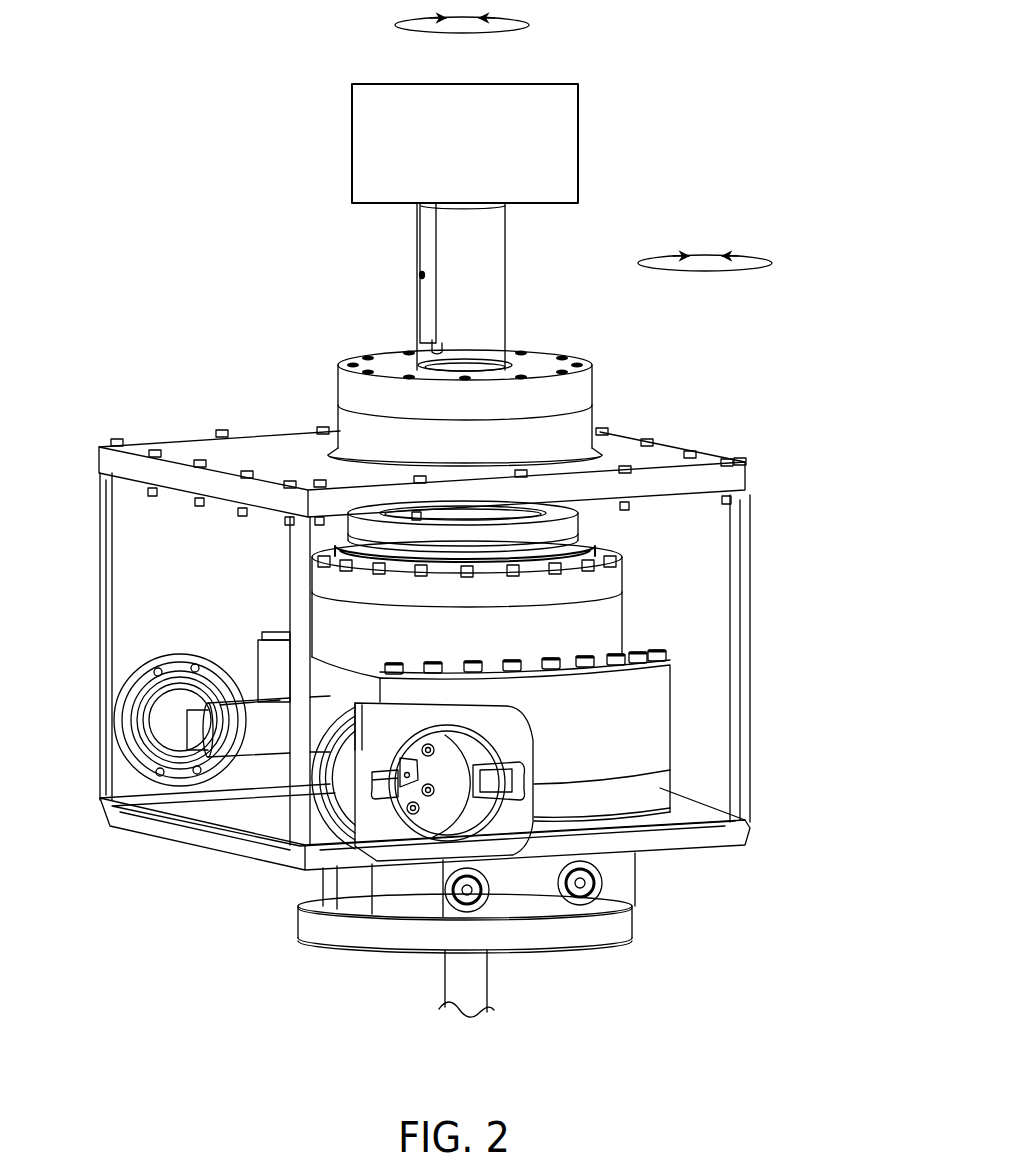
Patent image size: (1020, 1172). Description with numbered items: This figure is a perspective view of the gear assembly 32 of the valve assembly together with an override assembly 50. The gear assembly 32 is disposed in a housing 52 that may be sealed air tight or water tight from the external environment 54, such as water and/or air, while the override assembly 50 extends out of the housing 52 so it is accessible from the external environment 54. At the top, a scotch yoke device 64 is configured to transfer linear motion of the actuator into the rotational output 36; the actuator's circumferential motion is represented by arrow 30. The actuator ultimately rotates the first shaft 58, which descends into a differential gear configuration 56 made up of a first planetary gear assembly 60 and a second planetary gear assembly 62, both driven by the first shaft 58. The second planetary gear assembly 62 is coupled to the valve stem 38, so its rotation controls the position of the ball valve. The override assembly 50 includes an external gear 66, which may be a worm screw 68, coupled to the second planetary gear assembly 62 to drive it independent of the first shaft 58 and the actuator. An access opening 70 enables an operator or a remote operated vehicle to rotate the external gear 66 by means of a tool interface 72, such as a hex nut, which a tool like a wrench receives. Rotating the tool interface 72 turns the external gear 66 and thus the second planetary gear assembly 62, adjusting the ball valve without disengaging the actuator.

The circumferential motion 30 is at (497, 33).
The scotch yoke device 64 is at (578, 143).
The first shaft 58 is at (497, 253).
The rotational output 36 is at (740, 268).
The gear assembly 32 is at (727, 410).
The housing 52 is at (705, 462).
The external environment 54 is at (841, 634).
The differential gear configuration 56 is at (668, 597).
The first planetary gear assembly 60 is at (615, 604).
The second planetary gear assembly 62 is at (662, 697).
The external gear 66 is at (244, 662).
The override assembly 50 is at (237, 740).
The worm screw 68 is at (250, 754).
The access opening 70 is at (462, 808).
The tool interface 72 is at (408, 772).
The valve stem 38 is at (488, 985).